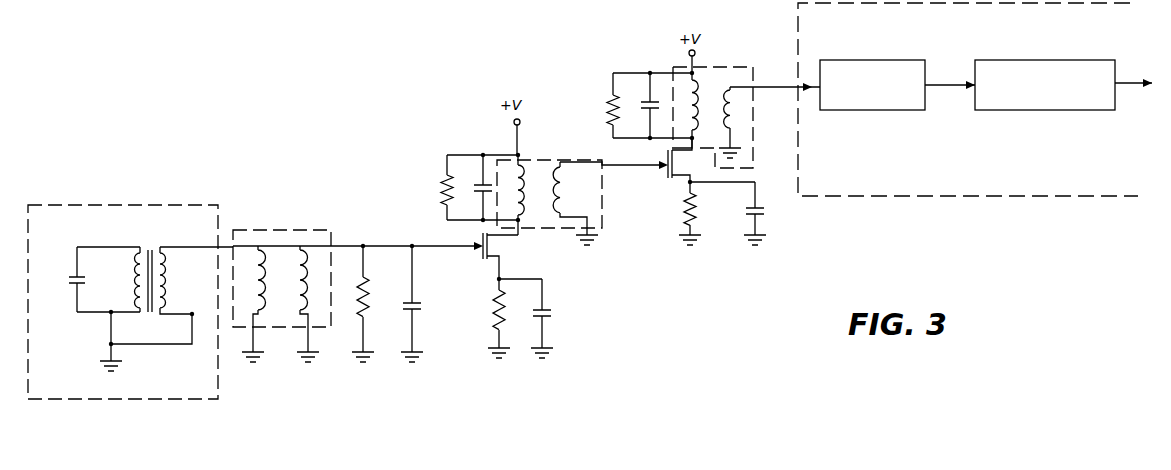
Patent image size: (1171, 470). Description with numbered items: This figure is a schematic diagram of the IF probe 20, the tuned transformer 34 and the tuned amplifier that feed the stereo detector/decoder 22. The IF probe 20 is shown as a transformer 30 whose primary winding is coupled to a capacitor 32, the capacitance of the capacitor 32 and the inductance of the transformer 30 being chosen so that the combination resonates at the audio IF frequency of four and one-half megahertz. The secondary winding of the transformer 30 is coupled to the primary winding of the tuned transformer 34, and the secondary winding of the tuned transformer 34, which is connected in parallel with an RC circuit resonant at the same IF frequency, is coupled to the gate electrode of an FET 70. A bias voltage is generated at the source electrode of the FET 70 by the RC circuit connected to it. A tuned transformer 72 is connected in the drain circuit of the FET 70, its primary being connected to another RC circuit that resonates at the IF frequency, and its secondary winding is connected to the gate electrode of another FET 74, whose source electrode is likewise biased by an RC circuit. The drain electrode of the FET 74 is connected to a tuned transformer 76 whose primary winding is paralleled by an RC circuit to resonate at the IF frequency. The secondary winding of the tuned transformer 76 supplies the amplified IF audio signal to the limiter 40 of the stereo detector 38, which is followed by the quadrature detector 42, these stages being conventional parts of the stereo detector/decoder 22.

The IF probe 20 is at (218, 392).
The stereo detector/decoder 22 is at (552, 6).
The transformer 30 is at (150, 250).
The capacitor 32 is at (70, 284).
The tuned transformer 34 is at (310, 230).
The stereo detector 38 is at (873, 197).
The limiter 40 is at (882, 106).
The quadrature detector 42 is at (1022, 110).
The FET 70 is at (491, 262).
The tuned transformer 72 is at (538, 228).
The FET 74 is at (676, 180).
The tuned transformer 76 is at (745, 74).